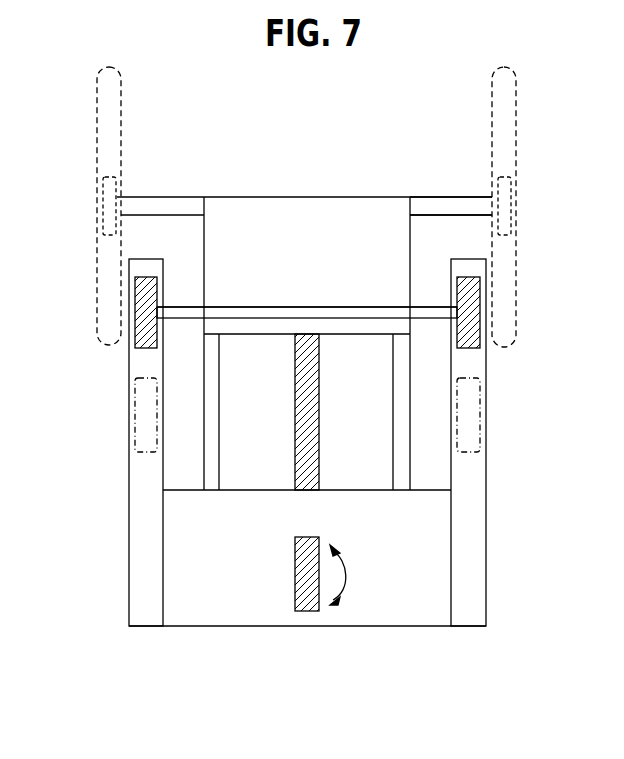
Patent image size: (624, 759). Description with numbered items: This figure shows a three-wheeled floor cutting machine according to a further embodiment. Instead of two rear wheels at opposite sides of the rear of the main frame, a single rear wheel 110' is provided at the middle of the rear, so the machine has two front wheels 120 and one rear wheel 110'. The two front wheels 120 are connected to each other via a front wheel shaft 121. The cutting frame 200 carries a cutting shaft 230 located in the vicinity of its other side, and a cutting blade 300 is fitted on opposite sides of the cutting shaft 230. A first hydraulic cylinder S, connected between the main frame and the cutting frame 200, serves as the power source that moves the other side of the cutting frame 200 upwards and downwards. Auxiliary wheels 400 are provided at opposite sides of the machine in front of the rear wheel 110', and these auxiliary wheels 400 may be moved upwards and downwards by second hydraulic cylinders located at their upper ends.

The cutting frame 200 is at (283, 197).
The cutting shaft 230 is at (450, 197).
The cutting blade 300 is at (122, 96).
The front wheel 120 is at (486, 308).
The front wheel shaft 121 is at (388, 306).
The first hydraulic cylinder S is at (320, 442).
The auxiliary wheel 400 is at (135, 412).
The rear wheel 110' is at (261, 623).